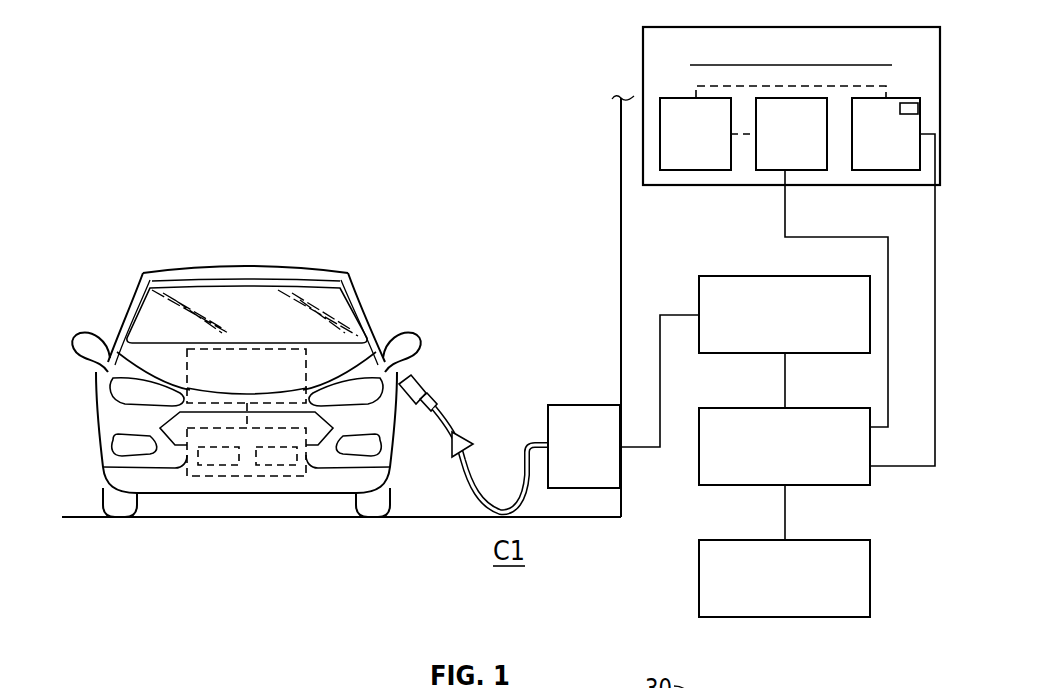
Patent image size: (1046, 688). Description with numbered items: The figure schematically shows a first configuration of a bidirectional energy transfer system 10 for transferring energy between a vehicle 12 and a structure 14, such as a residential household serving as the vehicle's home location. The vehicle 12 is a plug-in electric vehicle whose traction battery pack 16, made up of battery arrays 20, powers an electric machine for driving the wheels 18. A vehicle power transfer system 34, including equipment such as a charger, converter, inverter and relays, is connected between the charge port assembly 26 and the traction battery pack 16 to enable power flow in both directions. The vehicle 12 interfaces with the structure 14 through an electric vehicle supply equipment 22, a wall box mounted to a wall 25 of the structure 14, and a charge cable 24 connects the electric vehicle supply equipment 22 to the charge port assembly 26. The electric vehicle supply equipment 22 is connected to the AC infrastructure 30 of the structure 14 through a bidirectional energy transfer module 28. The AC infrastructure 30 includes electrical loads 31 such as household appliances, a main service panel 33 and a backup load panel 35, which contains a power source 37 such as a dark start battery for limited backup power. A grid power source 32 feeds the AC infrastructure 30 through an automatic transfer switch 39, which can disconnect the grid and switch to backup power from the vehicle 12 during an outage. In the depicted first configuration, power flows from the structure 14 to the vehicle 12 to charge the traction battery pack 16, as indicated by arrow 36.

The bidirectional energy transfer system 10 is at (185, 118).
The vehicle 12 is at (256, 227).
The structure 14 is at (614, 201).
The traction battery pack 16 is at (230, 477).
The wheels 18 is at (118, 508).
The battery arrays 20 is at (203, 467).
The electric vehicle supply equipment (EVSE) 22 is at (575, 405).
The charge cable 24 is at (487, 497).
The wall 25 is at (620, 267).
The charge port assembly 26 is at (420, 364).
The bidirectional energy transfer module 28 is at (753, 276).
The AC infrastructure 30 is at (697, 27).
The electrical loads 31 is at (712, 150).
The grid power source 32 is at (753, 540).
The main service panel 33 is at (805, 150).
The vehicle power transfer system 34 is at (238, 350).
The backup load panel 35 is at (903, 150).
The arrow 36 is at (468, 438).
The power source 37 is at (906, 103).
The automatic transfer switch 39 is at (753, 408).